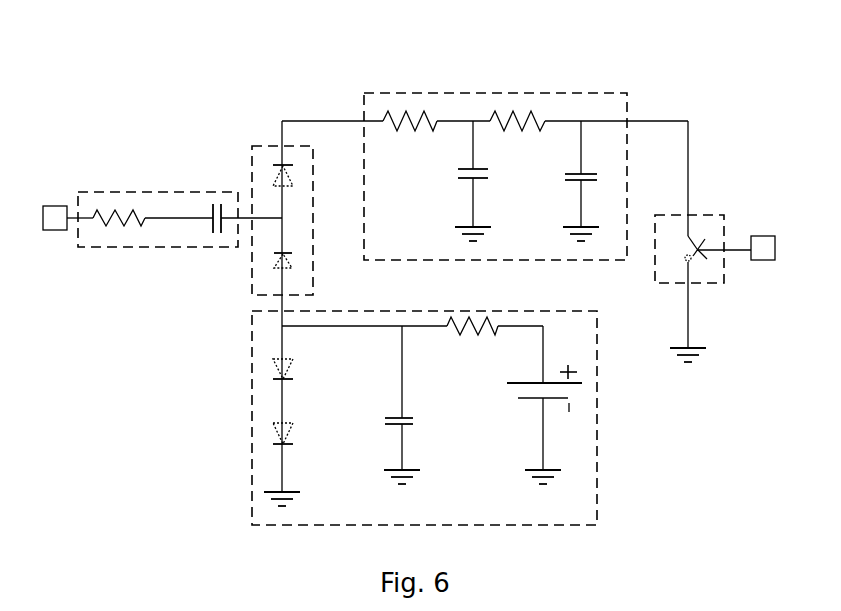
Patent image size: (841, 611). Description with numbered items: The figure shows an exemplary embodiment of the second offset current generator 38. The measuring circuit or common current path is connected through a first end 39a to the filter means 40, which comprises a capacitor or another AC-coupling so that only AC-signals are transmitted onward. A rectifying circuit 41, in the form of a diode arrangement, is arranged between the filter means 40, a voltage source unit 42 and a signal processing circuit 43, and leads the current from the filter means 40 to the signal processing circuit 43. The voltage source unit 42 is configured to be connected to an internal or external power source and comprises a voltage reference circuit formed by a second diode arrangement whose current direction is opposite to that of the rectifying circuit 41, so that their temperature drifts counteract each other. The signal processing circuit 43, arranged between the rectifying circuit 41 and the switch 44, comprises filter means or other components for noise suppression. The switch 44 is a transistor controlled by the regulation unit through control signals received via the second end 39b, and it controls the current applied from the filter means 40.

The second offset current generator 38 is at (135, 395).
The first end 39a is at (55, 231).
The second end 39b is at (756, 261).
The filter means 40 is at (132, 247).
The rectifying circuit 41 is at (252, 165).
The voltage source unit 42 is at (250, 377).
The signal processing circuit 43 is at (420, 92).
The switch 44 is at (702, 215).